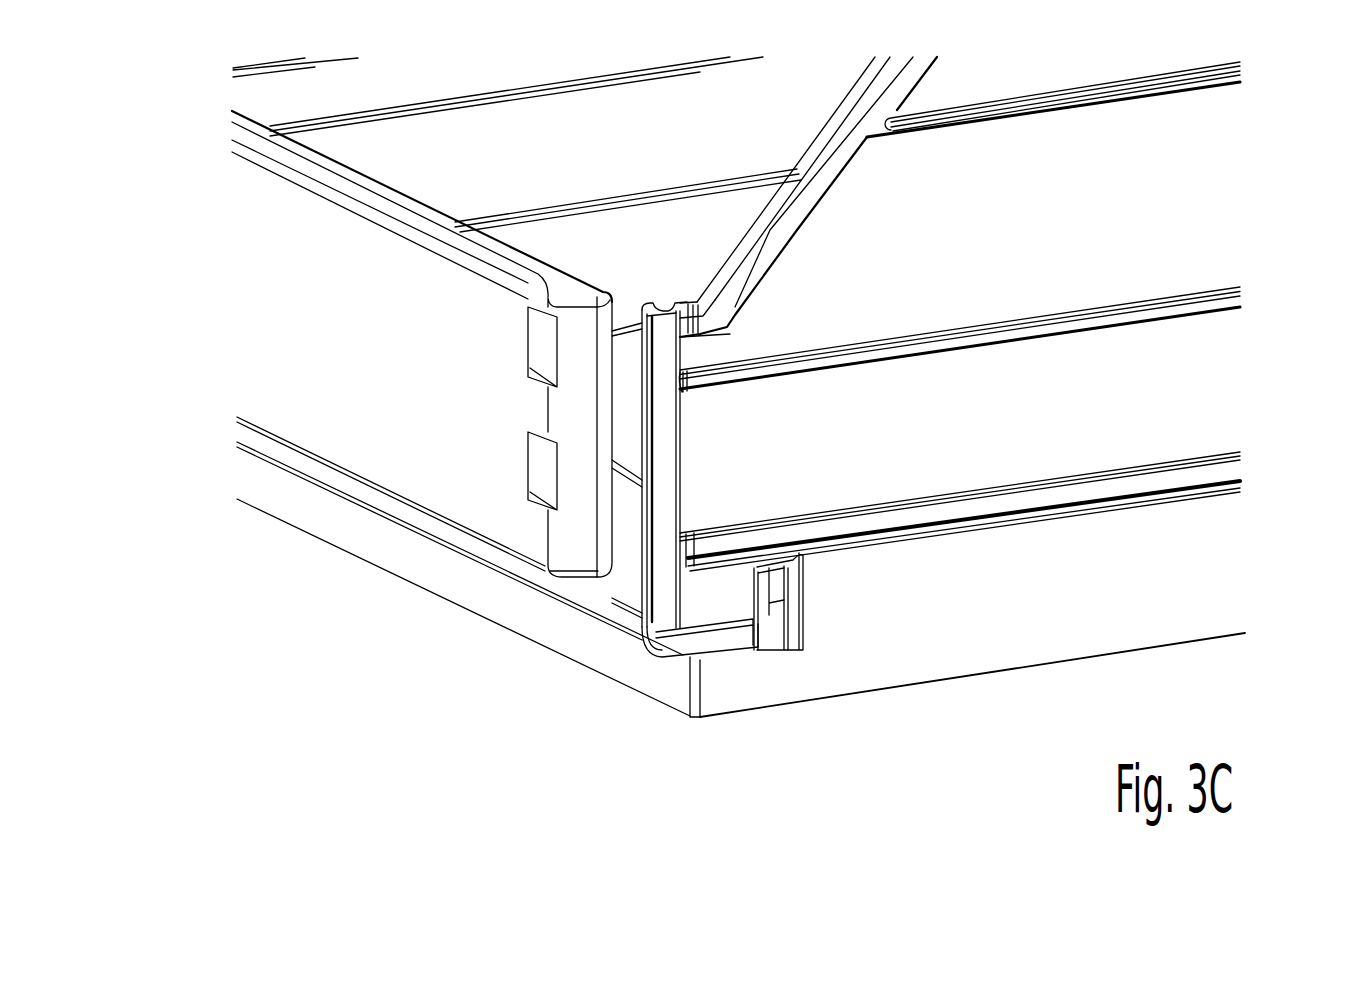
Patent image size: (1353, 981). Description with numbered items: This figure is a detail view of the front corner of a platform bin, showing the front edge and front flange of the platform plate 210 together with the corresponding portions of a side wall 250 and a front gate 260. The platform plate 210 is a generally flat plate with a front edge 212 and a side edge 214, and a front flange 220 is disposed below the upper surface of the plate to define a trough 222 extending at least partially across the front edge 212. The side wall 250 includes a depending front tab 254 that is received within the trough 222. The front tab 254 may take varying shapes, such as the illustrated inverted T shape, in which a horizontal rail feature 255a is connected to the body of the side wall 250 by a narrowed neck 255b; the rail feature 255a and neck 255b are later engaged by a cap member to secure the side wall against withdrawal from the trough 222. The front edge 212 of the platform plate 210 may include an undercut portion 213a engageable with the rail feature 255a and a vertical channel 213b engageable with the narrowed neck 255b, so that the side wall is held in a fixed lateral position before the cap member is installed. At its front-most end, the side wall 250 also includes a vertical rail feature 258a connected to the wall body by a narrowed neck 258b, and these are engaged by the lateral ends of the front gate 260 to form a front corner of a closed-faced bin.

The side wall 250 is at (1133, 200).
The front gate 260 is at (292, 320).
The front flange 220 is at (417, 565).
The trough 222 is at (608, 593).
The platform plate 210 is at (1043, 620).
The side edge 214 is at (1190, 582).
The front edge 212 is at (803, 567).
The undercut portion 213a is at (790, 605).
The vertical channel 213b is at (790, 580).
The depending front tab 254 is at (708, 600).
The horizontal rail feature 255a is at (672, 648).
The narrowed neck 255b is at (655, 625).
The vertical rail feature 258a is at (647, 306).
The narrowed neck 258b is at (680, 318).